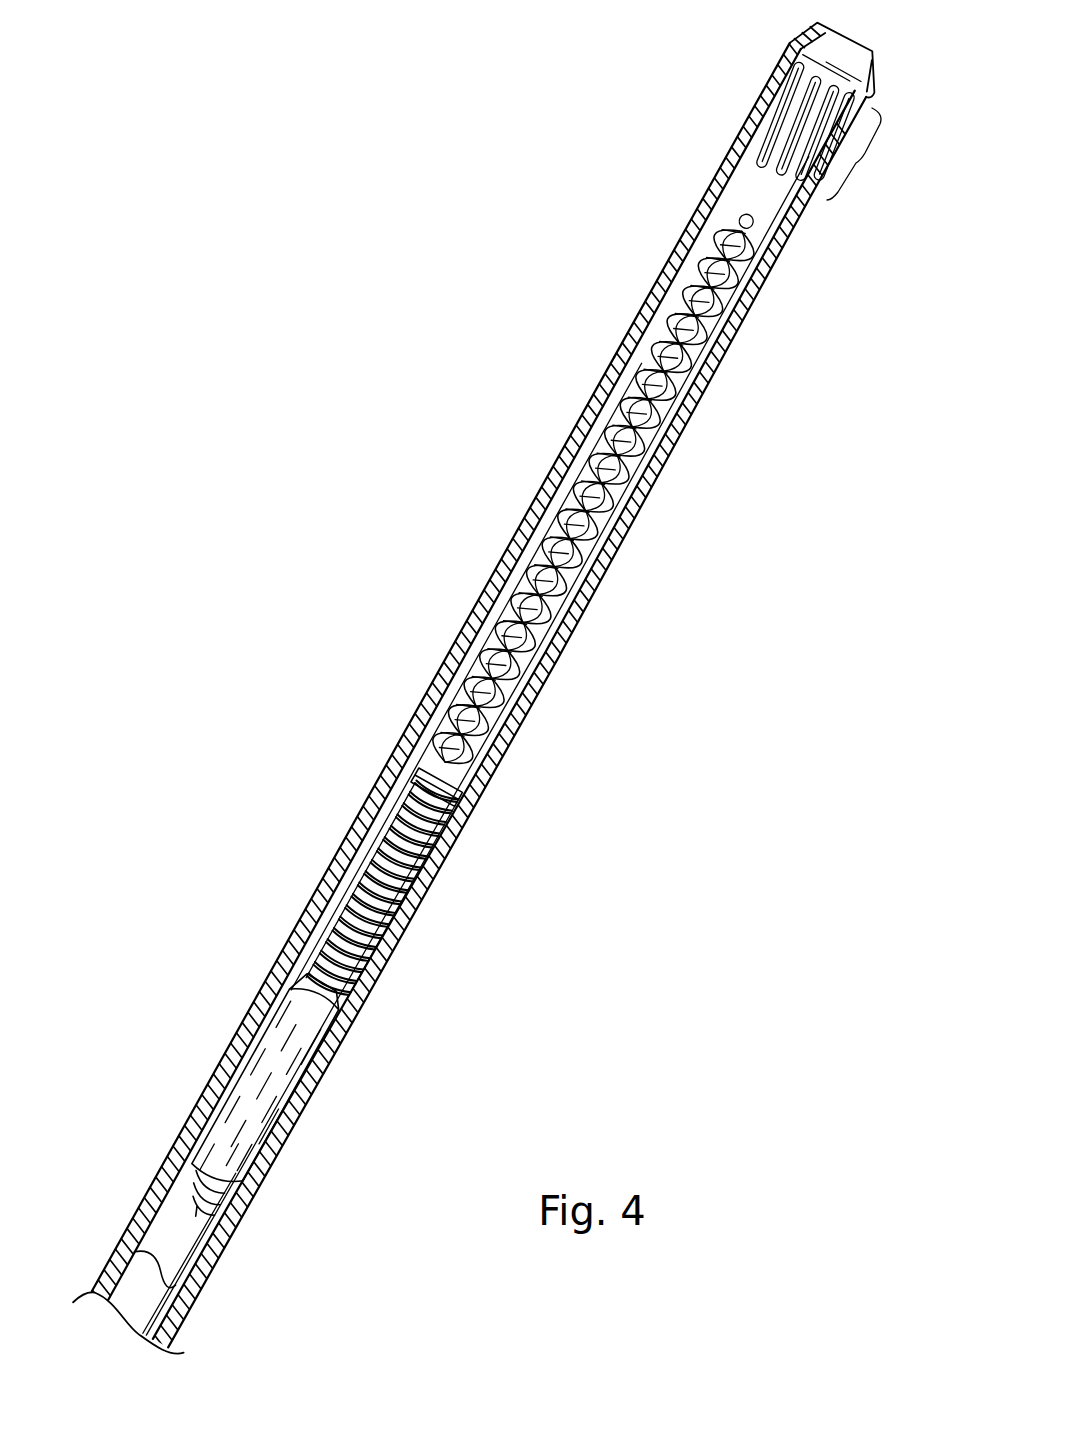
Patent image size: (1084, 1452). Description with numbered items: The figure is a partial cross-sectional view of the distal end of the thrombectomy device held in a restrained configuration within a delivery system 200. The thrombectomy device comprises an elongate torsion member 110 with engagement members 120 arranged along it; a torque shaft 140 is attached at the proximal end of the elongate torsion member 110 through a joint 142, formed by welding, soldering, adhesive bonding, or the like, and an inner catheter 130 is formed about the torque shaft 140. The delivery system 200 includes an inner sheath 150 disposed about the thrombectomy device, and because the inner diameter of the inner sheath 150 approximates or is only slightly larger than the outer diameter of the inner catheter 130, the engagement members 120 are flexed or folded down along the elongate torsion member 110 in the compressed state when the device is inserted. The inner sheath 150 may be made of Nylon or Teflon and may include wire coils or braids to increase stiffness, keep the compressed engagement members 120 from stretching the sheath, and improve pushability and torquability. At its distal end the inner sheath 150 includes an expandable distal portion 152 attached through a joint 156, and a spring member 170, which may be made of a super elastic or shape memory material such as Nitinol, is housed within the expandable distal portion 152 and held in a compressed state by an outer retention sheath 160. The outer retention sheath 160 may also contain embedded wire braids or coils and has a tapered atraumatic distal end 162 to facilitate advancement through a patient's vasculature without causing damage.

The elongate torsion member 110 is at (470, 687).
The engagement members 120 is at (722, 227).
The inner catheter 130 is at (255, 1053).
The torque shaft 140 is at (390, 837).
The joint 142 is at (420, 773).
The inner sheath 150 is at (557, 445).
The expandable distal portion 152 is at (864, 157).
The joint 156 is at (720, 160).
The outer retention sheath 160 is at (663, 260).
The tapered atraumatic distal end 162 is at (878, 70).
The spring member 170 is at (797, 116).
The delivery system 200 is at (337, 293).